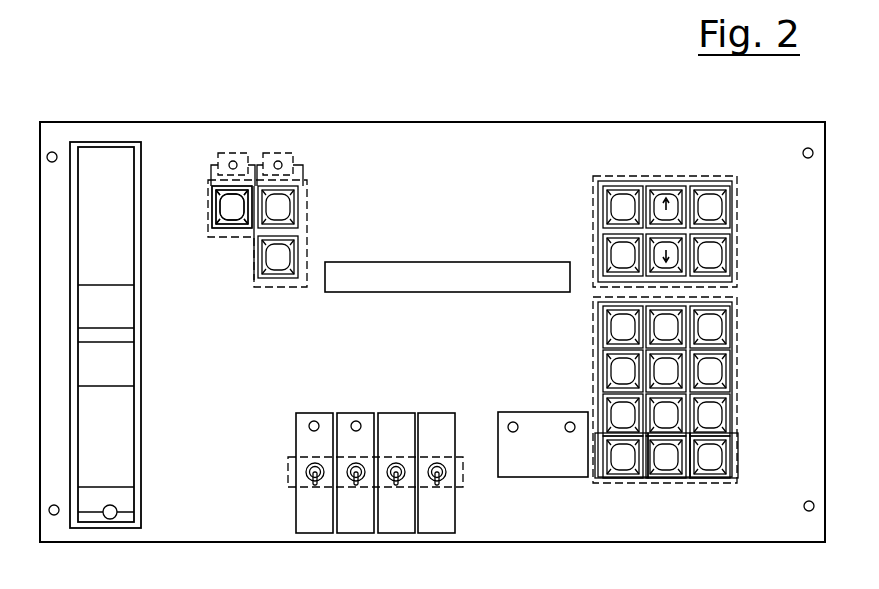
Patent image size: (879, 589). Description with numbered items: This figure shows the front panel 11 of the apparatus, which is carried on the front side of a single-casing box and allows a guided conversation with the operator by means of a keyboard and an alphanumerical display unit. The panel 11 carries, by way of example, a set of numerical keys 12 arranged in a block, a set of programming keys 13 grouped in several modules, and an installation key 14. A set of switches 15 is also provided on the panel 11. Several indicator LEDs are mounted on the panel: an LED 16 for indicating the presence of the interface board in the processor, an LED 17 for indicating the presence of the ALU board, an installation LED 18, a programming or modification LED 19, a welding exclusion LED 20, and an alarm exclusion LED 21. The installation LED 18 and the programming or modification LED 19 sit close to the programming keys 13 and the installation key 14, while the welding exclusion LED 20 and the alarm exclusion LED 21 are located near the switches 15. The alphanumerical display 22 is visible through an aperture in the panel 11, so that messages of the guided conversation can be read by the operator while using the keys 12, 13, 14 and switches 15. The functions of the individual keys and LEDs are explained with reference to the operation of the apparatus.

The panel 11 is at (603, 137).
The set of numerical keys 12 is at (737, 362).
The set of programming keys 13 is at (303, 190).
The installation key 14 is at (238, 225).
The set of switches 15 is at (288, 469).
The LED for indicating the presence of the interface board 16 is at (570, 422).
The LED for indicating the presence of the ALU board 17 is at (513, 422).
The installation LED 18 is at (228, 152).
The programming or modification LED 19 is at (276, 152).
The welding exclusion LED 20 is at (356, 421).
The alarm exclusion LED 21 is at (314, 421).
The alphanumerical display 22 is at (438, 291).